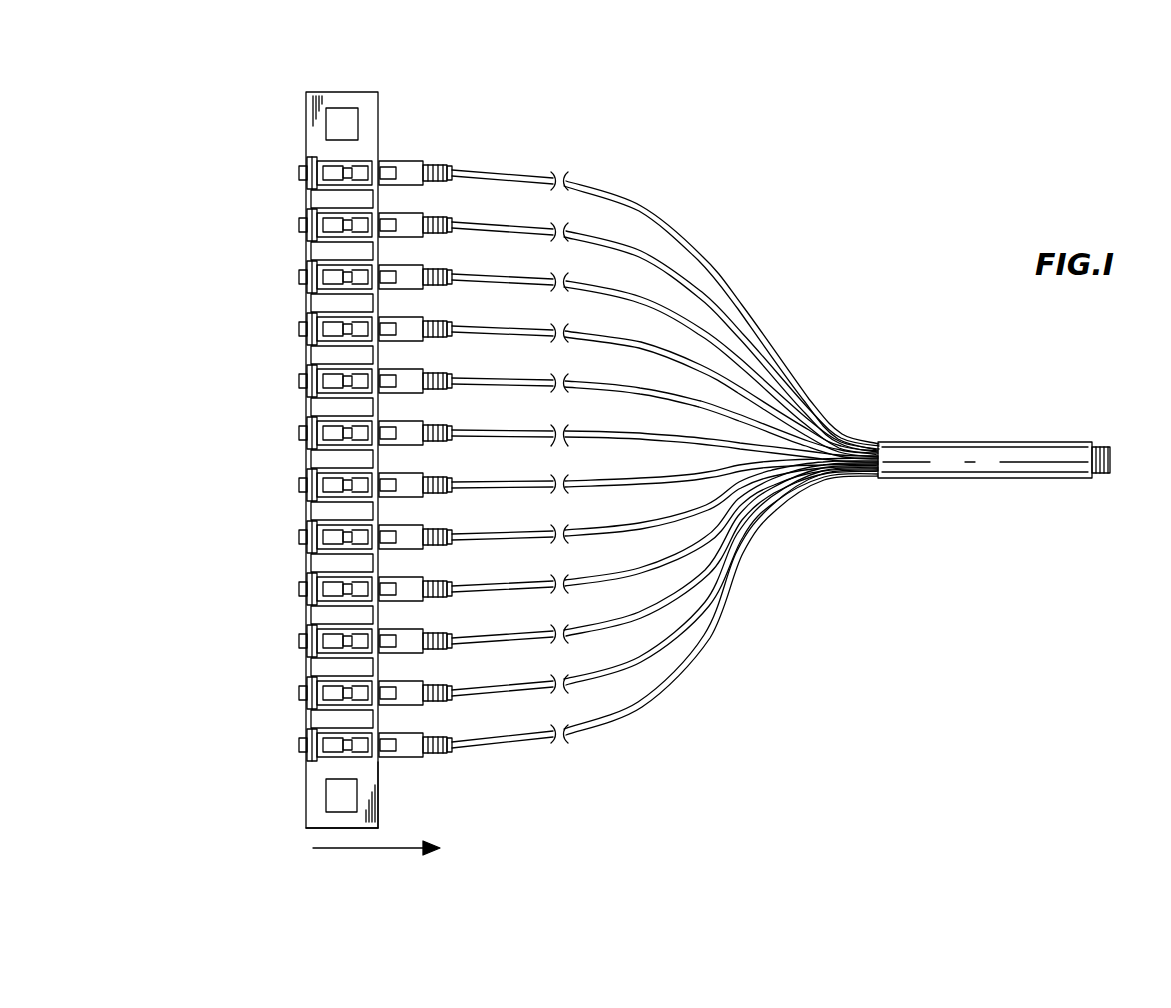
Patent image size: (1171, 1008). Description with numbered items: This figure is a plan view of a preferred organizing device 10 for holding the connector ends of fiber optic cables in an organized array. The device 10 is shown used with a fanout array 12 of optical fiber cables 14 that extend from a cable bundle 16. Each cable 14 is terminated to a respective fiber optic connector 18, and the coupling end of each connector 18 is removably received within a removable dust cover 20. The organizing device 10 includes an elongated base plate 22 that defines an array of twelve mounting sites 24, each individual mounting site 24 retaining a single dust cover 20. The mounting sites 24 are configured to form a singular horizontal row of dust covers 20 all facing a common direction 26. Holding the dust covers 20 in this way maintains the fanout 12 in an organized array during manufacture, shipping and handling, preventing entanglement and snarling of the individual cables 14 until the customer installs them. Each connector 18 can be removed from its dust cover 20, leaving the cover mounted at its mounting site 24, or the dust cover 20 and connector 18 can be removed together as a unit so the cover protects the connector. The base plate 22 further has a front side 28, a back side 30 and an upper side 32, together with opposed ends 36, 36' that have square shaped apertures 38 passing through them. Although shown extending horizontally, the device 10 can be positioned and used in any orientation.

The organizing device 10 is at (243, 166).
The fanout array 12 is at (803, 393).
The optical fiber cables 14 is at (652, 316).
The cable bundle 16 is at (1100, 440).
The fiber optic connector 18 is at (408, 212).
The dust cover 20 is at (349, 158).
The base plate 22 is at (310, 770).
The mounting sites 24 is at (303, 421).
The common direction 26 is at (370, 850).
The front side 28 is at (380, 795).
The back side 30 is at (306, 828).
The upper side 32 is at (303, 717).
The end 36 is at (276, 95).
The opposed end 36' is at (327, 835).
The square shaped apertures 38 is at (344, 114).